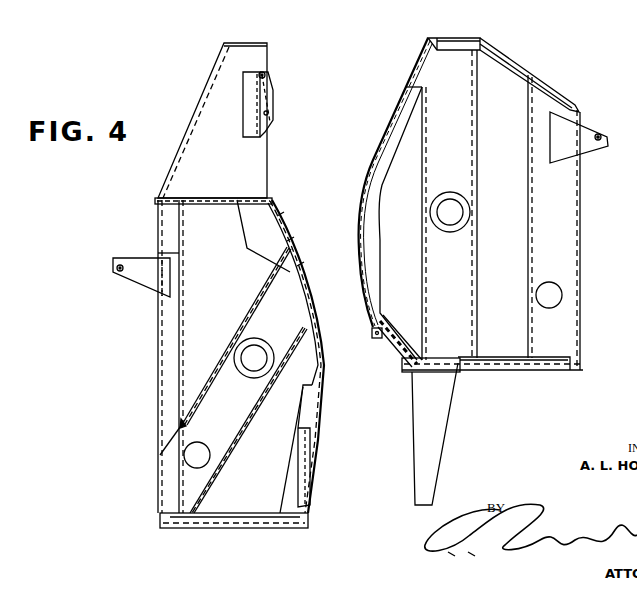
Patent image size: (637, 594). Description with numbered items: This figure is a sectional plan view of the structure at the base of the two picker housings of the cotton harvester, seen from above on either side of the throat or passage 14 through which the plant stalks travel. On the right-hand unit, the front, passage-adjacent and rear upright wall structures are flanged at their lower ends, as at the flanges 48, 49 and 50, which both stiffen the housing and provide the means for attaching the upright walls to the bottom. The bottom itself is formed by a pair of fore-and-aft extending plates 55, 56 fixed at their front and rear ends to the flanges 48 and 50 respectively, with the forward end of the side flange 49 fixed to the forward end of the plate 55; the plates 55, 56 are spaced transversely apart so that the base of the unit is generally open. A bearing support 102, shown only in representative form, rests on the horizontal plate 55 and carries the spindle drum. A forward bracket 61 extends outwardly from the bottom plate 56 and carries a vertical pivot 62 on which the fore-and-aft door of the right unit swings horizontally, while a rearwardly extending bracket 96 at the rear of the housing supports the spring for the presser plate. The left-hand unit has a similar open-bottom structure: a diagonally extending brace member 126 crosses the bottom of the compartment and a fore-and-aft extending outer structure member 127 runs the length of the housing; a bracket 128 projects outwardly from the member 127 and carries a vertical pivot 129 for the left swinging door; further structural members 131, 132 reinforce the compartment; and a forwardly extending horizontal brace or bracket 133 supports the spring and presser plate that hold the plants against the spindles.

The throat or passage 14 is at (343, 88).
The flange 48 is at (460, 45).
The flange 49 is at (394, 157).
The flange 50 is at (494, 362).
The fore-and-aft extending plate 55 is at (468, 243).
The fore-and-aft extending plate 56 is at (573, 243).
The forward bracket 61 is at (587, 128).
The vertical pivot 62 is at (602, 135).
The rearwardly extending bracket 96 is at (440, 430).
The bearing support 102 is at (465, 197).
The diagonally extending brace member 126 is at (218, 375).
The fore-and-aft extending outer structure member 127 is at (178, 295).
The bracket 128 is at (147, 277).
The vertical pivot 129 is at (121, 265).
The structural member 131 is at (278, 206).
The structural member 132 is at (298, 470).
The forwardly extending horizontal brace or bracket 133 is at (243, 155).